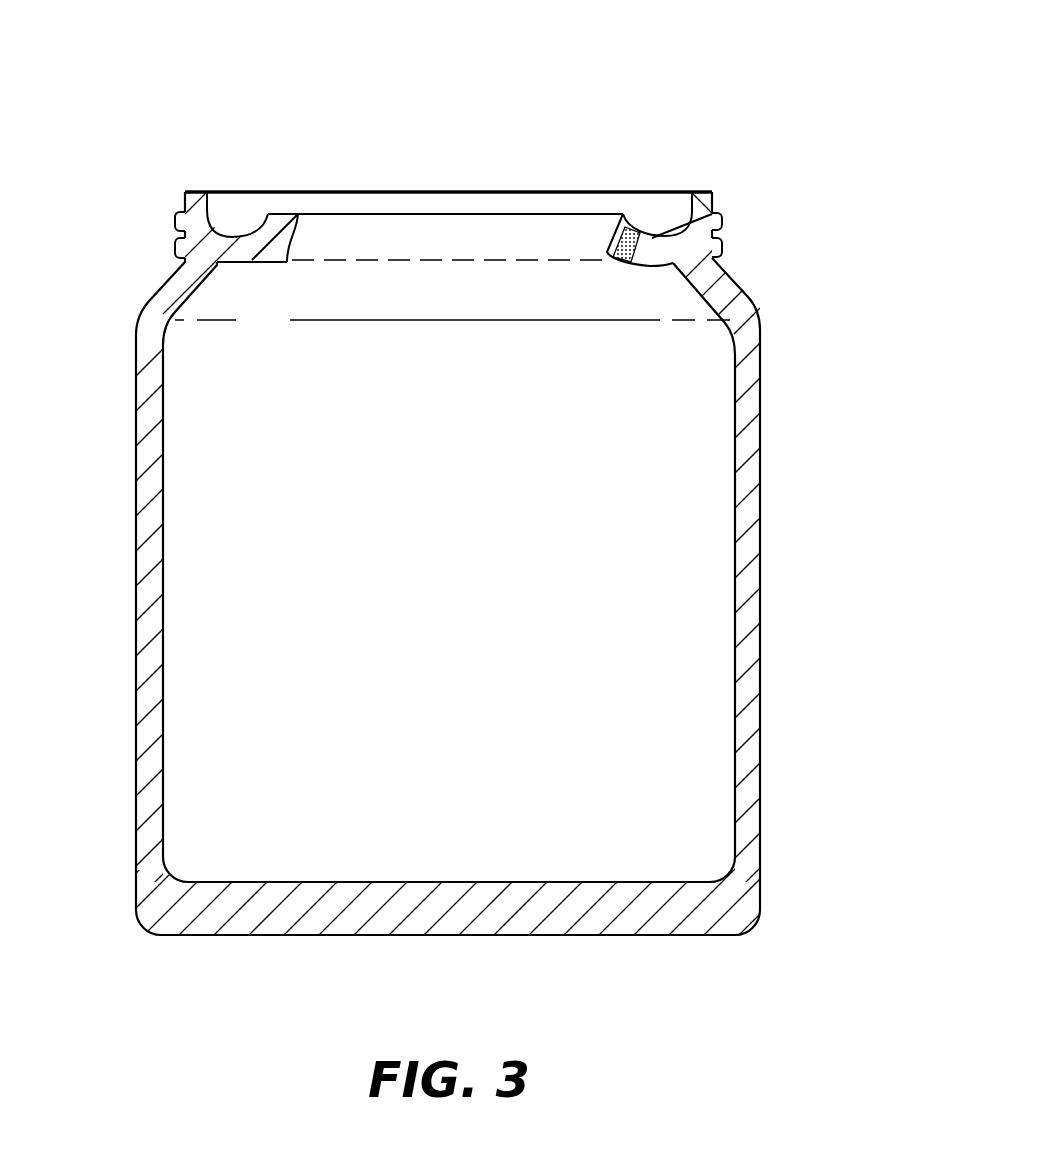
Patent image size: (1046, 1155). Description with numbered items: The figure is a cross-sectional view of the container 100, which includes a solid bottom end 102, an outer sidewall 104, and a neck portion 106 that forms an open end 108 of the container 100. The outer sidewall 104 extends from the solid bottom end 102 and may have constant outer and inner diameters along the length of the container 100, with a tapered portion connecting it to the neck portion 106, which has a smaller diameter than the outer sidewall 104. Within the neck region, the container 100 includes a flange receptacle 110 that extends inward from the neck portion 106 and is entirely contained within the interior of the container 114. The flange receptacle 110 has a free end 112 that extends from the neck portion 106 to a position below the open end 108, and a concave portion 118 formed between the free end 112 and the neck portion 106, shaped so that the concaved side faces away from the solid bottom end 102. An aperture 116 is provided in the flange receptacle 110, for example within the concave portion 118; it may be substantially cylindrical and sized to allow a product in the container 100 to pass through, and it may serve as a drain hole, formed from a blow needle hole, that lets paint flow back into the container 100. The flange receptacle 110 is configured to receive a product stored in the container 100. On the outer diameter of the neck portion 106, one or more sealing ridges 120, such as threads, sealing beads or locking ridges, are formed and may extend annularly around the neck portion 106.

The container 100 is at (830, 140).
The solid bottom end 102 is at (300, 937).
The outer sidewall 104 is at (134, 542).
The neck portion 106 is at (183, 234).
The open end 108 is at (400, 190).
The flange receptacle 110 is at (236, 264).
The free end 112 is at (300, 232).
The interior of the container 114 is at (356, 612).
The aperture 116 is at (612, 258).
The concave portion 118 is at (684, 212).
The sealing ridge 120 is at (721, 214).